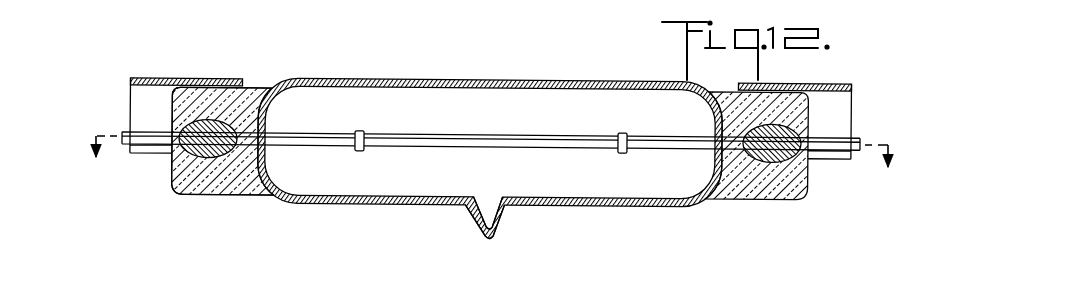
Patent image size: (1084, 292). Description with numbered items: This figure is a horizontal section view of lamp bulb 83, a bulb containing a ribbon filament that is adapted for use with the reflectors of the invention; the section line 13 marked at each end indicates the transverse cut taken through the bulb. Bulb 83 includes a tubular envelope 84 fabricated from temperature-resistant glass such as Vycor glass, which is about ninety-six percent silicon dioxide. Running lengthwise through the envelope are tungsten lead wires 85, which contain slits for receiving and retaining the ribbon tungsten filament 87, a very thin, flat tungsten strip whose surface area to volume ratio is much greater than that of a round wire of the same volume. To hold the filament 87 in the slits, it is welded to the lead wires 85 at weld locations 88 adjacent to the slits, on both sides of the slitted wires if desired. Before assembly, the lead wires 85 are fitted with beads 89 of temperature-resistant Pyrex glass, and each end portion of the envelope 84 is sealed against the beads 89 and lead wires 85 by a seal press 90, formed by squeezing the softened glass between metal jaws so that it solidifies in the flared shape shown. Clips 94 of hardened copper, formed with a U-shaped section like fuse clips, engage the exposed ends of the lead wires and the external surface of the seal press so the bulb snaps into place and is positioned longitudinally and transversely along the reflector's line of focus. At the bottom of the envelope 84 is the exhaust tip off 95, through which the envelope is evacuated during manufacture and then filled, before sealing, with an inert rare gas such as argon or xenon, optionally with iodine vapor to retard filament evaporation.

The section line 13- 13 is at (493, 174).
The lamp bulb 83 is at (598, 225).
The tubular envelope 84 is at (324, 205).
The tungsten lead wires 85 is at (318, 140).
The ribbon tungsten filament 87 is at (483, 143).
The weld locations 88 is at (358, 152).
The beads 89 is at (182, 164).
The seal press 90 is at (198, 204).
The clips 94 is at (133, 90).
The exhaust tip off 95 is at (487, 240).